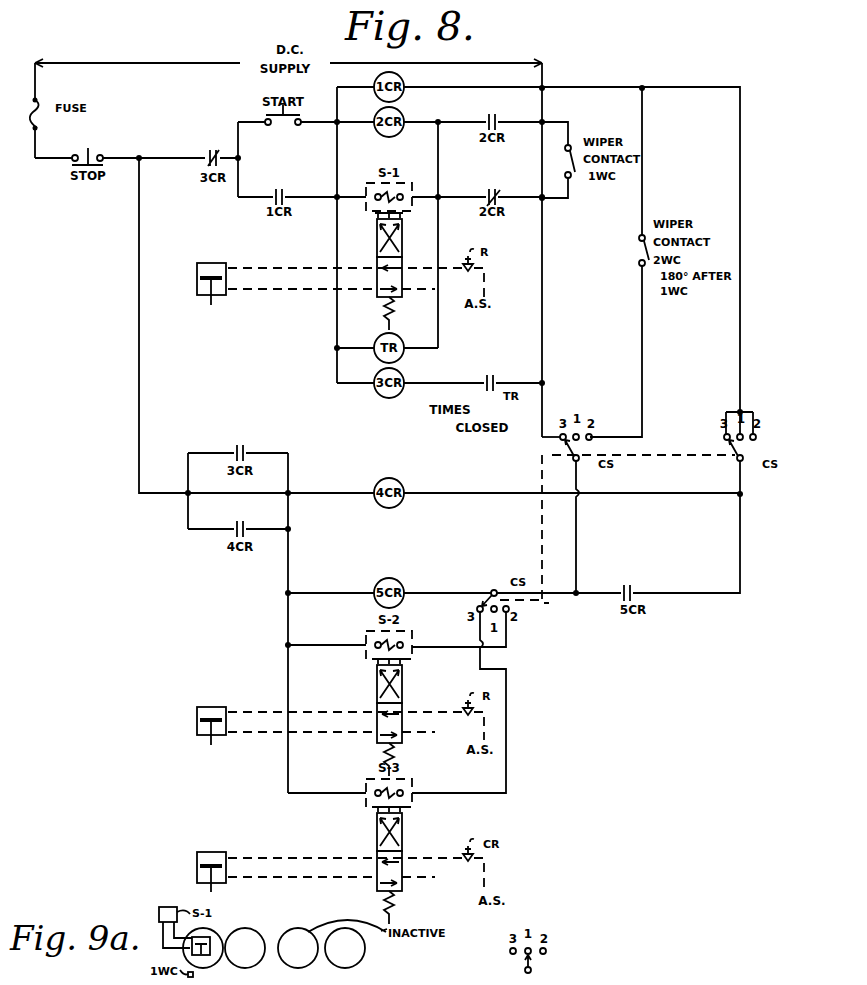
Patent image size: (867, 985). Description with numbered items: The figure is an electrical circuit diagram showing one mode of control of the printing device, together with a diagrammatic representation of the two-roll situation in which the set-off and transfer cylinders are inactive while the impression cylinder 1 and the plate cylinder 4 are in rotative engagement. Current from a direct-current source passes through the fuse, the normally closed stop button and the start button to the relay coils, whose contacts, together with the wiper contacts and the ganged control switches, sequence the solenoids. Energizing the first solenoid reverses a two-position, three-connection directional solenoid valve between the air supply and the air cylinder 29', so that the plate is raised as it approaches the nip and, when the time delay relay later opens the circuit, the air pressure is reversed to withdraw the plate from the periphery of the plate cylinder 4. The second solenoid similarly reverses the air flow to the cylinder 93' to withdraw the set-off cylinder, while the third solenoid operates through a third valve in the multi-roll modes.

In FIG. 8, the air cylinder 29' is at (188, 294).
In FIG. 8, the cylinder 93' is at (182, 799).
In FIG. 9A, the plate cylinder 4 is at (219, 936).
In FIG. 9A, the impression cylinder 1 is at (264, 934).